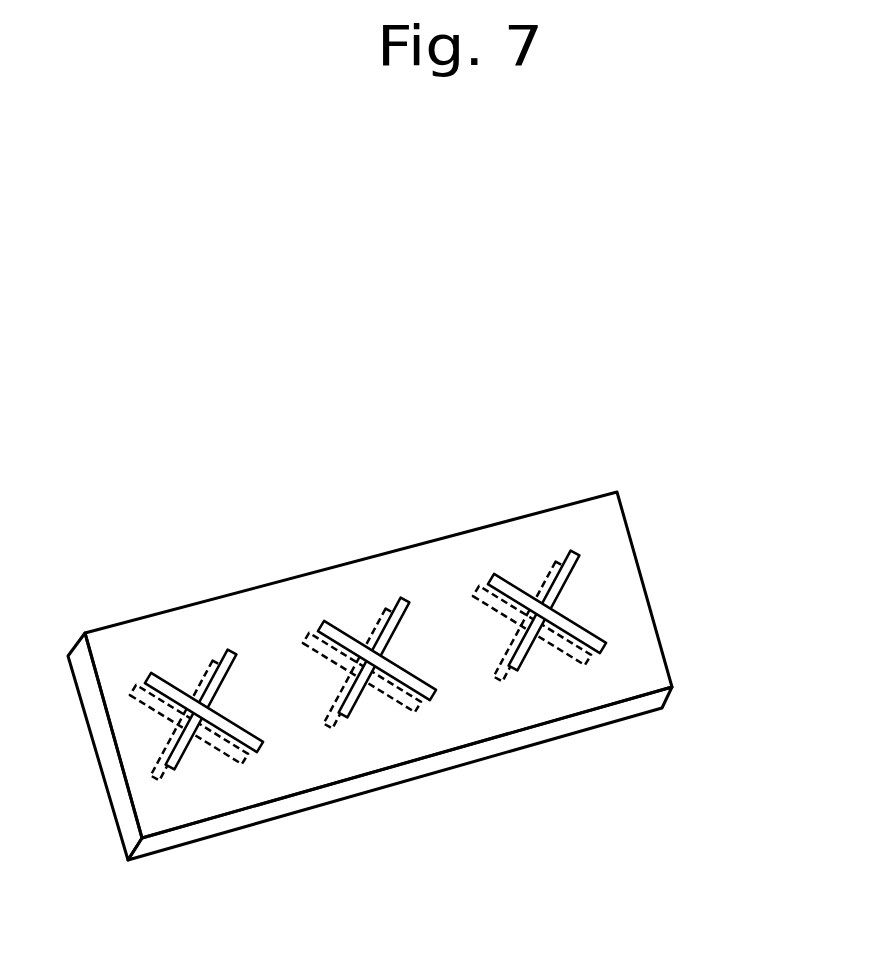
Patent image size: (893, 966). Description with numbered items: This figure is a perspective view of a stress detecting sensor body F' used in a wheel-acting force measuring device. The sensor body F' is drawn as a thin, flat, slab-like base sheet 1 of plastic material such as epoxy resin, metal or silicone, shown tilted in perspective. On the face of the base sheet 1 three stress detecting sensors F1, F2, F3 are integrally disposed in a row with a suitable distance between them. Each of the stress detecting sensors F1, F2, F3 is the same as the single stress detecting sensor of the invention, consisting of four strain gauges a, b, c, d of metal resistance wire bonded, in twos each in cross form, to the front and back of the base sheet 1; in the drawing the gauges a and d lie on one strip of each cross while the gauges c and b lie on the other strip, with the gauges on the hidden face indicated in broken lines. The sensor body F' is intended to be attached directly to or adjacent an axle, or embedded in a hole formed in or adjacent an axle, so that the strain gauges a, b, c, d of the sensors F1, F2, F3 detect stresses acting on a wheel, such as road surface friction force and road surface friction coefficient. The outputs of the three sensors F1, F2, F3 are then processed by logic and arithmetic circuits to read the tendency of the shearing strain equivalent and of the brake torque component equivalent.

The base sheet 1 is at (117, 647).
The stress detecting sensor F1 is at (204, 599).
The stress detecting sensor F2 is at (397, 590).
The stress detecting sensor F3 is at (570, 543).
The stress detecting sensor body F' is at (731, 522).
The strain gauge a is at (217, 691).
The strain gauge b is at (201, 723).
The strain gauge c is at (204, 693).
The strain gauge d is at (190, 731).